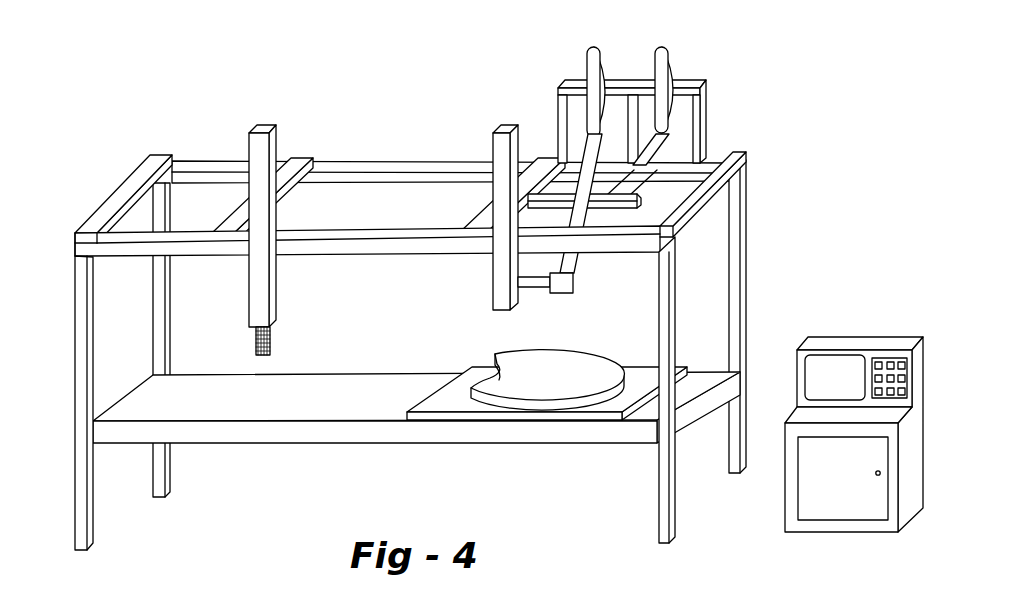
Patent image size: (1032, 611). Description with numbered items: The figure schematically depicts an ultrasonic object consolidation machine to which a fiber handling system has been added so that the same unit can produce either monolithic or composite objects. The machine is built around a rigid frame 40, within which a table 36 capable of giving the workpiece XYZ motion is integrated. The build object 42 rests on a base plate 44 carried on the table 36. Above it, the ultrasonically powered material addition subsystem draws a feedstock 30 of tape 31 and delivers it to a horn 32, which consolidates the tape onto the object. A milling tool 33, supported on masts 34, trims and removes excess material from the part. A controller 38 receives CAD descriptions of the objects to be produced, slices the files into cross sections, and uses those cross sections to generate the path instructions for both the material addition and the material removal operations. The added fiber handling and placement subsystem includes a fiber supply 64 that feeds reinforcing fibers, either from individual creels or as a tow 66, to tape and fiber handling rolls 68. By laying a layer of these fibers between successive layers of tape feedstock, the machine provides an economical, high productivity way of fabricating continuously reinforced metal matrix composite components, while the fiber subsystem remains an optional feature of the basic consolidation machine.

The feedstock 30 is at (590, 55).
The tape 31 is at (587, 143).
The horn 32 is at (573, 285).
The milling tool 33 is at (255, 345).
The masts 34 is at (267, 126).
The table 36 is at (313, 445).
The controller 38 is at (825, 315).
The rigid frame 40 is at (410, 324).
The build object 42 is at (543, 392).
The base plate 44 is at (478, 427).
The fiber supply 64 is at (668, 62).
The tow 66 is at (660, 143).
The tape and fiber handling rolls 68 is at (643, 197).